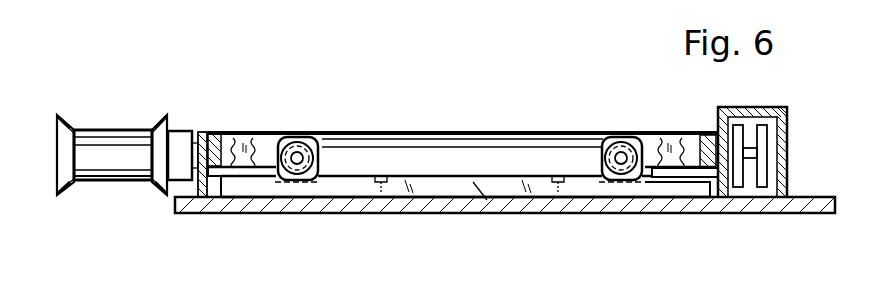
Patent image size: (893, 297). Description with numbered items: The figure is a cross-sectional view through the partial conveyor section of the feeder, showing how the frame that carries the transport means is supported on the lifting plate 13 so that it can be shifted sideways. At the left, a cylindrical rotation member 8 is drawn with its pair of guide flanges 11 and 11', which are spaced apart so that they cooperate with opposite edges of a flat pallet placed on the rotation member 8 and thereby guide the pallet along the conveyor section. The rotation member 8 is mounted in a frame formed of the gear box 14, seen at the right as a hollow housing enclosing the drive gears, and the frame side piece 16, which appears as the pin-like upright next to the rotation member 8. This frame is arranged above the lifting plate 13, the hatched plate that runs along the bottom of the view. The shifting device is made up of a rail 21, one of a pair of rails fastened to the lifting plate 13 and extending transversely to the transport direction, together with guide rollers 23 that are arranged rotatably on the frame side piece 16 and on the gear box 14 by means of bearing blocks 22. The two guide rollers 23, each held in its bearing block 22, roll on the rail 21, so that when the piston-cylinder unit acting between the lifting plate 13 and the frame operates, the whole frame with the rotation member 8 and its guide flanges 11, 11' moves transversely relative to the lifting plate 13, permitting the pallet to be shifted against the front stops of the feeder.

The rotation member 8 is at (112, 152).
The guide flange 11 is at (73, 183).
The guide flange 11' is at (167, 183).
The lifting plate 13 is at (800, 193).
The gear box 14 is at (762, 108).
The frame side piece 16 is at (203, 128).
The rail 21 is at (487, 203).
The bearing block 22 is at (284, 136).
The guide roller 23 is at (598, 186).